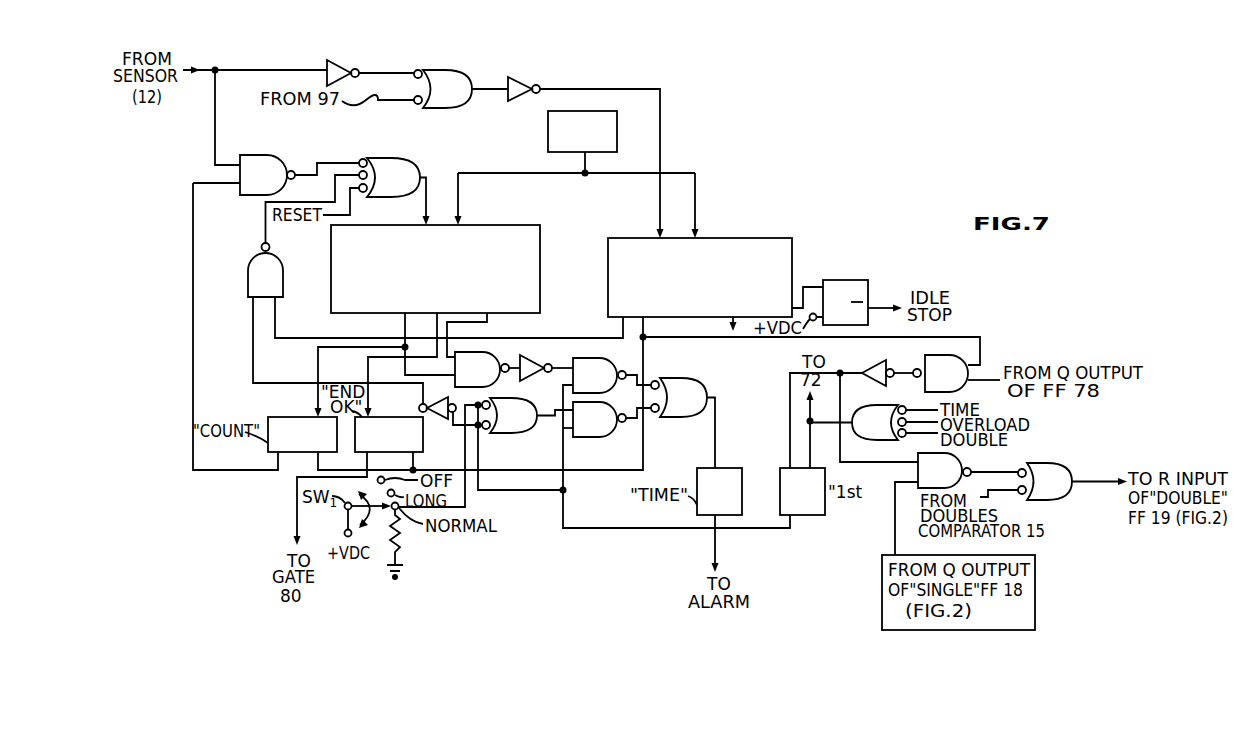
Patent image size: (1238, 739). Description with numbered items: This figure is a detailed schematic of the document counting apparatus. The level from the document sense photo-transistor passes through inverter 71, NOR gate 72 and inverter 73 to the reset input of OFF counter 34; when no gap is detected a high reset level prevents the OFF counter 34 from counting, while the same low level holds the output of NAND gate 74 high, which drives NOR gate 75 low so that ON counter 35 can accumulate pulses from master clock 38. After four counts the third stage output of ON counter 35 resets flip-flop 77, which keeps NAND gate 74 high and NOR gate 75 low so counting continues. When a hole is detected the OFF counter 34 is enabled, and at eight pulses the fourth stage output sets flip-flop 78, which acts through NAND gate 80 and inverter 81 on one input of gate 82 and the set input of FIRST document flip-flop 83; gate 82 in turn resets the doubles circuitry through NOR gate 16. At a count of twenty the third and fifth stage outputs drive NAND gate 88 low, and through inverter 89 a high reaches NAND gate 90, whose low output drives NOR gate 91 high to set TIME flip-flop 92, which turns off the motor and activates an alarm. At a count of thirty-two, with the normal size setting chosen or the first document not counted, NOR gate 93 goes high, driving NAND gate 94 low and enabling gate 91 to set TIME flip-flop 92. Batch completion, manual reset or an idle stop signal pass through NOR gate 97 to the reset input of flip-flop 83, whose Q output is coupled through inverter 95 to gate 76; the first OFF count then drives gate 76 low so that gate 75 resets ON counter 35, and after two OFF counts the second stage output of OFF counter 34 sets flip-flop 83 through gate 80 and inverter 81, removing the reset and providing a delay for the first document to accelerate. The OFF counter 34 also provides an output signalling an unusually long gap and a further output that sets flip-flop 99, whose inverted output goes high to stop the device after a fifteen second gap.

The NOR gate 16 is at (1050, 468).
The OFF counter 34 is at (637, 289).
The ON counter 35 is at (360, 274).
The master clock 38 is at (548, 133).
The inverter 71 is at (331, 62).
The NOR gate 72 is at (433, 70).
The inverter 73 is at (520, 78).
The NAND gate 74 is at (256, 155).
The NOR gate 75 is at (390, 162).
The gate 76 is at (248, 276).
The flip-flop 77 is at (285, 417).
The flip-flop 78 is at (386, 417).
The NAND gate 80 is at (925, 361).
The inverter 81 is at (866, 363).
The gate 82 is at (969, 469).
The FIRST document flip-flop 83 is at (780, 470).
The NAND gate 88 is at (488, 379).
The inverter 89 is at (535, 352).
The NAND gate 90 is at (590, 360).
The NOR gate 91 is at (672, 378).
The TIME flip-flop 92 is at (697, 470).
The NOR gate 93 is at (520, 433).
The NAND gate 94 is at (600, 437).
The inverter 95 is at (428, 420).
The NOR gate 97 is at (867, 406).
The flip-flop 99 is at (838, 280).